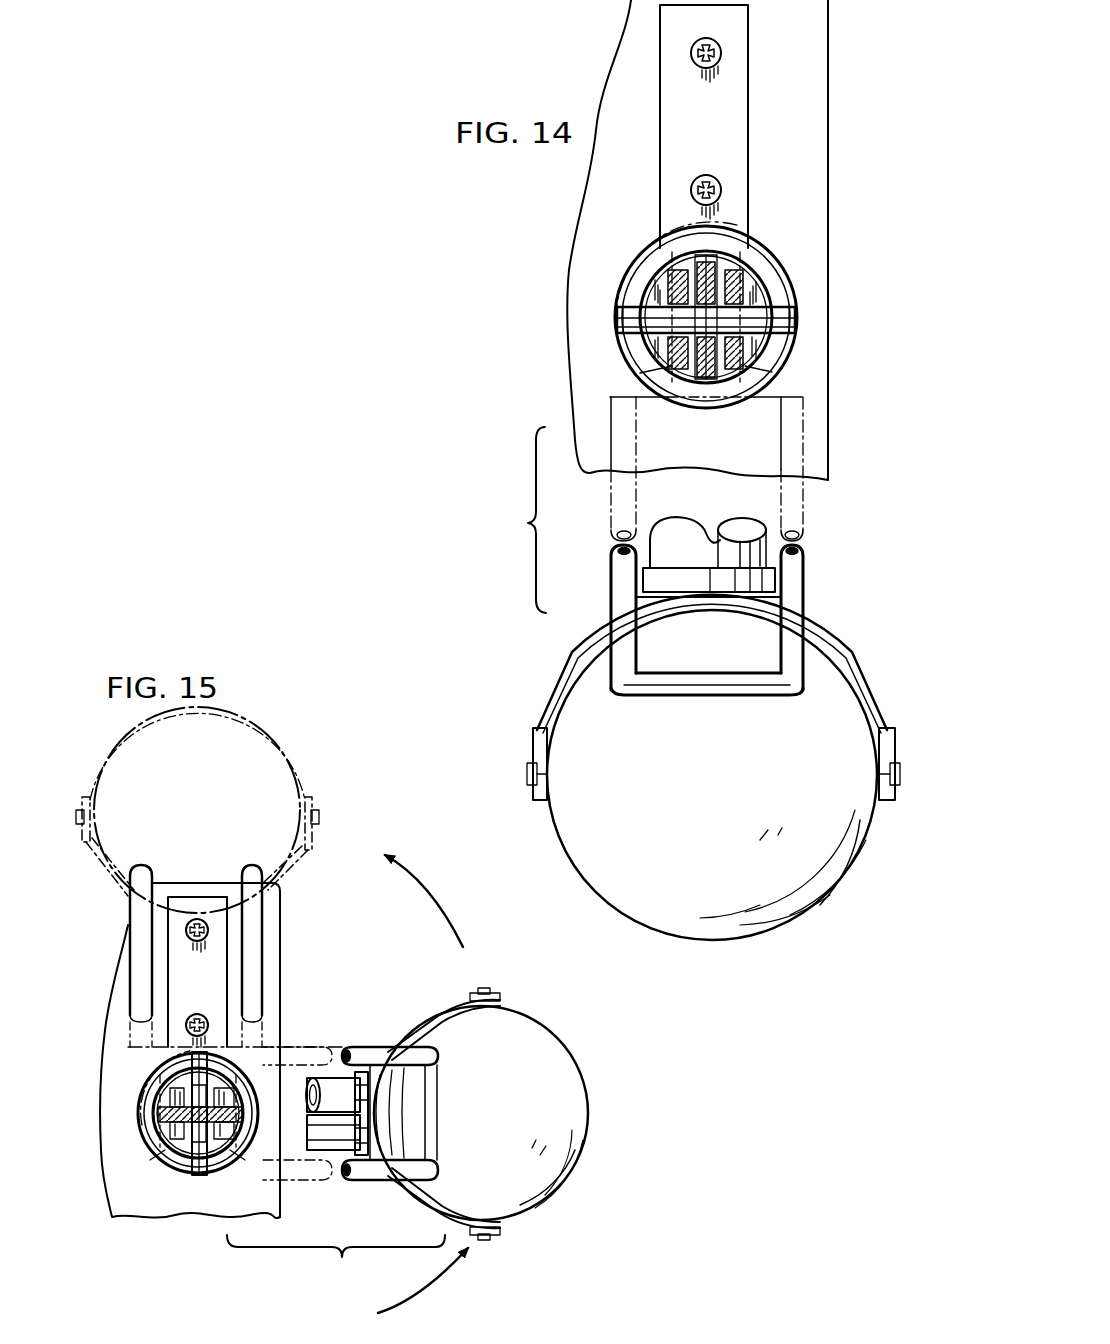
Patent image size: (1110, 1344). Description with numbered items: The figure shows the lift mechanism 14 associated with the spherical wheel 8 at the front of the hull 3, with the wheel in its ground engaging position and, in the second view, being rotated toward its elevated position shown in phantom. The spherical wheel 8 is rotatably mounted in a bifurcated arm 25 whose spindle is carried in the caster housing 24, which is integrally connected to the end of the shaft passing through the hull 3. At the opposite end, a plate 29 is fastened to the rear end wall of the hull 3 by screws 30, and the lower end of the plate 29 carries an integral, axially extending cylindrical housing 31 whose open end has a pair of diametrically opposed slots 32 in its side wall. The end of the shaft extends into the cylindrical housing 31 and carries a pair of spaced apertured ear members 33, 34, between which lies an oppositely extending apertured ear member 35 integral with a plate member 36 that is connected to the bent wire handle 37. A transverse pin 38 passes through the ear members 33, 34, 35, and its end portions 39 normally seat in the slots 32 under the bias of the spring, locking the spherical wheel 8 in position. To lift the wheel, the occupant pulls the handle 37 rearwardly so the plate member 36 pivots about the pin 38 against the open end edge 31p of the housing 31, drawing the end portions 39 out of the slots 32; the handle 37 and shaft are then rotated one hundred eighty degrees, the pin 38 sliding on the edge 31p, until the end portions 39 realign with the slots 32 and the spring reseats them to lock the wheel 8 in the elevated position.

In FIG. 14, the hull 3 is at (800, 88).
In FIG. 15, the hull 3 is at (268, 978).
In FIG. 14, the spherical wheel 8 is at (785, 897).
In FIG. 15, the spherical wheel 8 is at (283, 772).
In FIG. 14, the lift mechanism 14 is at (524, 427).
In FIG. 15, the lift mechanism 14 is at (92, 1158).
In FIG. 14, the caster housing 24 is at (688, 542).
In FIG. 15, the caster housing 24 is at (340, 1140).
In FIG. 14, the bifurcated arm 25 is at (826, 628).
In FIG. 15, the bifurcated arm 25 is at (308, 848).
In FIG. 14, the plate 29 is at (663, 100).
In FIG. 15, the plate 29 is at (217, 984).
In FIG. 14, the screws 30 is at (722, 53).
In FIG. 15, the screws 30 is at (188, 930).
In FIG. 14, the cylindrical housing 31 is at (762, 262).
In FIG. 15, the cylindrical housing 31 is at (240, 1165).
In FIG. 14, the open end edge 31p is at (676, 230).
In FIG. 15, the open end edge 31p is at (152, 1085).
In FIG. 14, the slots 32 is at (780, 292).
In FIG. 15, the slots 32 is at (142, 1118).
In FIG. 14, the apertured ear member 33 is at (640, 373).
In FIG. 15, the apertured ear member 33 is at (172, 1192).
In FIG. 14, the apertured ear member 34 is at (780, 350).
In FIG. 15, the apertured ear member 34 is at (160, 1105).
In FIG. 14, the apertured ear member 35 is at (710, 372).
In FIG. 15, the apertured ear member 35 is at (150, 1160).
In FIG. 14, the plate member 36 is at (615, 380).
In FIG. 14, the bent wire handle 37 is at (800, 517).
In FIG. 15, the bent wire handle 37 is at (265, 905).
In FIG. 14, the pin 38 is at (690, 380).
In FIG. 15, the pin 38 is at (188, 1162).
In FIG. 14, the end portions 39 is at (800, 320).